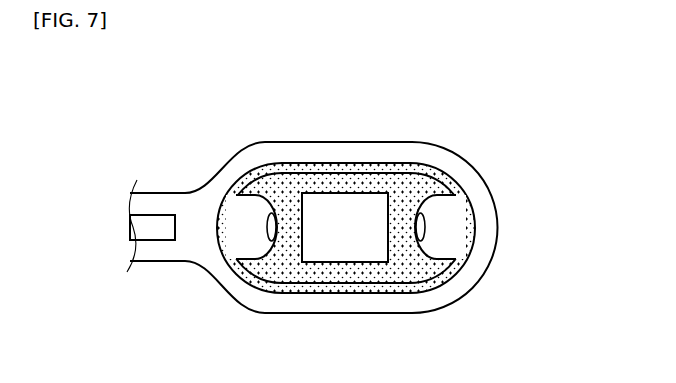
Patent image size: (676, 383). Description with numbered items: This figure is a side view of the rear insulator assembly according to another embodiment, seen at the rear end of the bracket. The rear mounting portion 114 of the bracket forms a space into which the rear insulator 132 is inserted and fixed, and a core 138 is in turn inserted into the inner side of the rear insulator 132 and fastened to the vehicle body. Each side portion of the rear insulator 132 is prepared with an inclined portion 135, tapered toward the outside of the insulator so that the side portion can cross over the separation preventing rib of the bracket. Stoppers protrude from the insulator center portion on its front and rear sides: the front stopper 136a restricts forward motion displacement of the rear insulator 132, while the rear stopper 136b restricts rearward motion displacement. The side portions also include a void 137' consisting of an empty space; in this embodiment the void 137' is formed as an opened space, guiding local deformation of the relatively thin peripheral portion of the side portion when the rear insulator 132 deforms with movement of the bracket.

The rear mounting portion 114 is at (412, 142).
The rear insulator 132 is at (313, 171).
The inclined portion 135 is at (444, 168).
The void 137' is at (360, 200).
The front stopper 136a is at (262, 273).
The rear stopper 136b is at (435, 273).
The core 138 is at (363, 248).